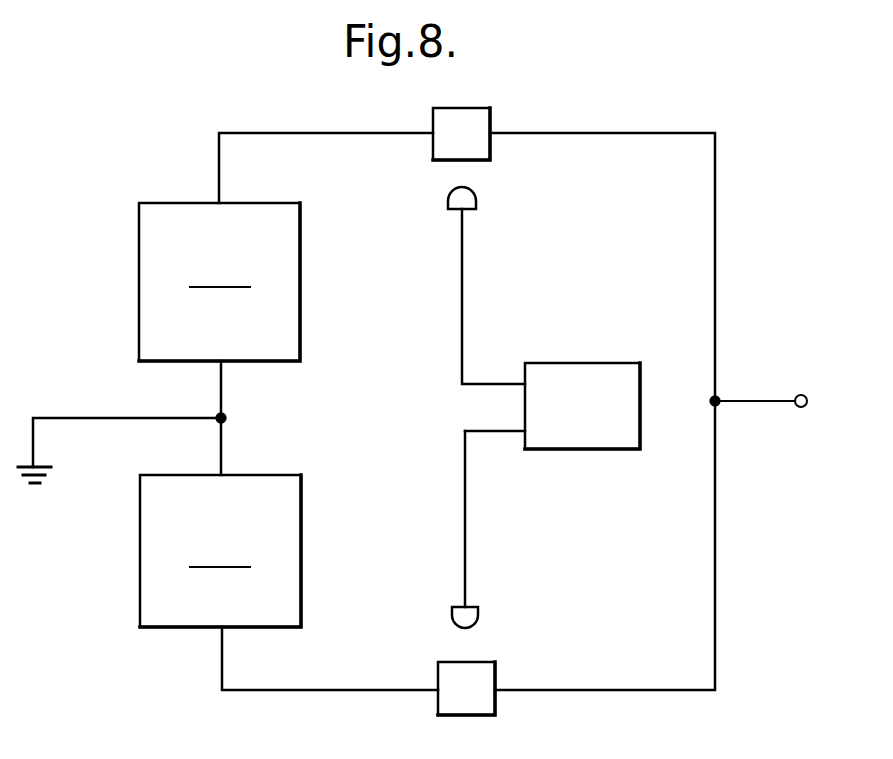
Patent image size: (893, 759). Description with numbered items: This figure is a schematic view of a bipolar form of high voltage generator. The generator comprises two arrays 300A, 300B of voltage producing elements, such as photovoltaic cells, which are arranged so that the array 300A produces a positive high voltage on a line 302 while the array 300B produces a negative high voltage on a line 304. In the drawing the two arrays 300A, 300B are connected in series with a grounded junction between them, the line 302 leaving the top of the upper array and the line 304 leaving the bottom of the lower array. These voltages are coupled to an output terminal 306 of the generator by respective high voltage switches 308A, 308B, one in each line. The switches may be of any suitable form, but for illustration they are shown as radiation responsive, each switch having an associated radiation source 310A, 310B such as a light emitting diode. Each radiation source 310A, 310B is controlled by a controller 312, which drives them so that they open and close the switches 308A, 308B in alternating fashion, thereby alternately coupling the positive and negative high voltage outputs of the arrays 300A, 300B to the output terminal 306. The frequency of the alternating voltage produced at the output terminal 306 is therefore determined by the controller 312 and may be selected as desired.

The array of voltage producing elements 300A is at (219, 282).
The array of voltage producing elements 300B is at (220, 551).
The line 302 is at (219, 163).
The line 304 is at (222, 660).
The output terminal 306 is at (799, 408).
The high voltage switch 308A is at (490, 113).
The high voltage switch 308B is at (495, 672).
The radiation source 310A is at (476, 201).
The radiation source 310B is at (478, 613).
The controller 312 is at (573, 363).